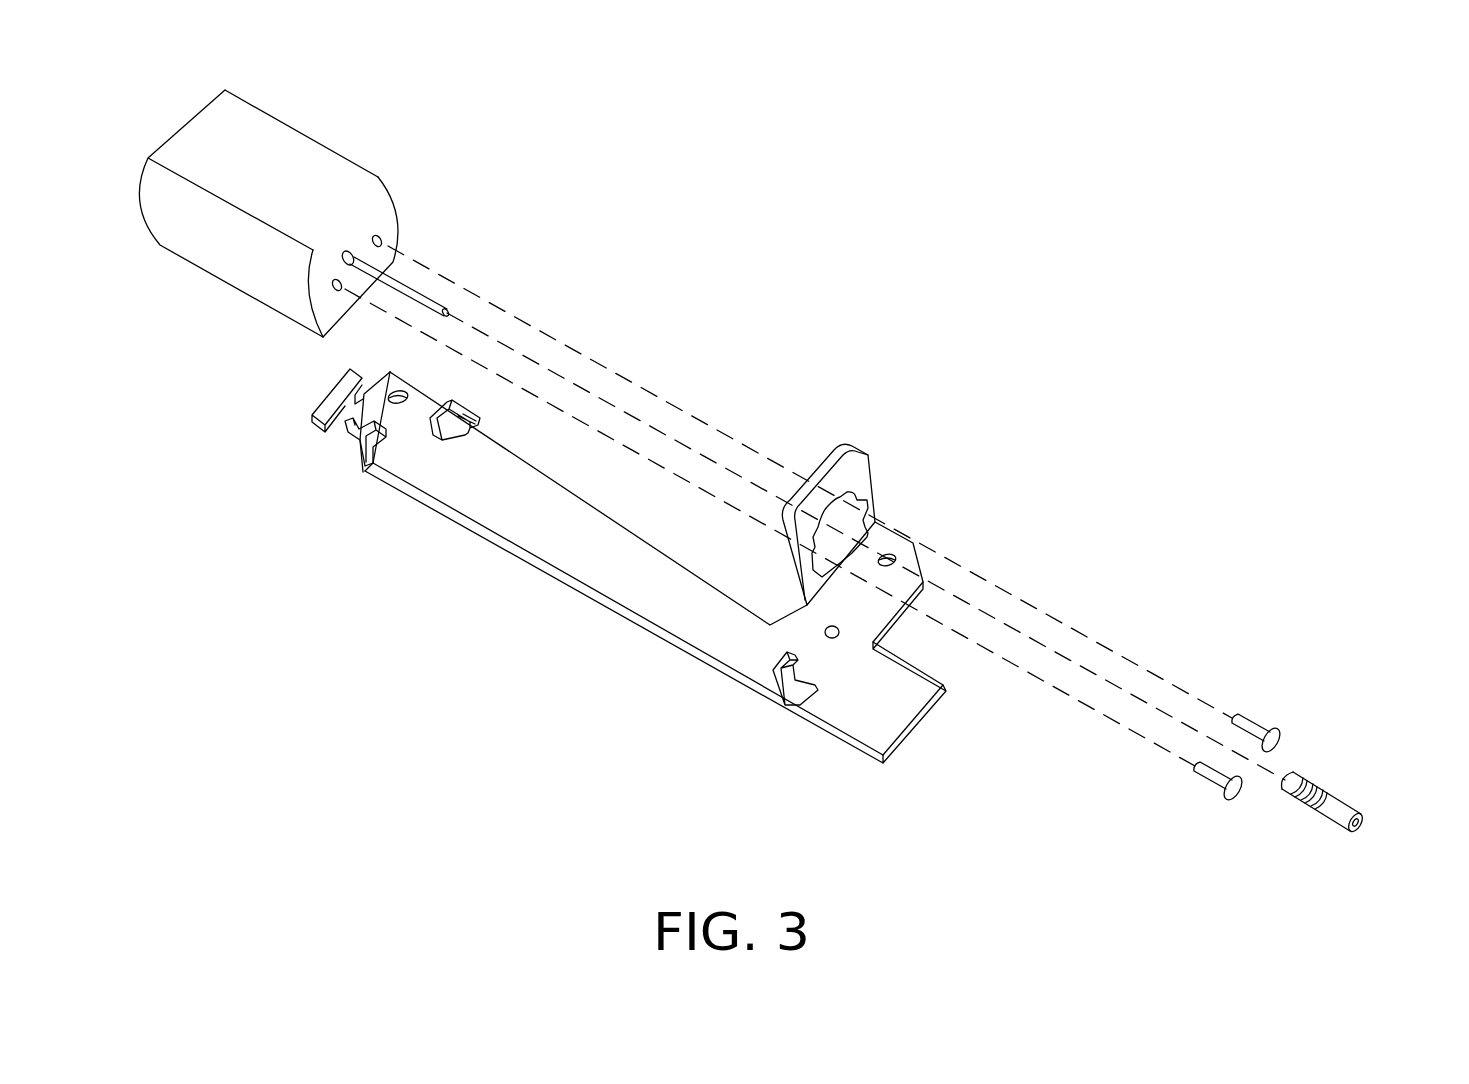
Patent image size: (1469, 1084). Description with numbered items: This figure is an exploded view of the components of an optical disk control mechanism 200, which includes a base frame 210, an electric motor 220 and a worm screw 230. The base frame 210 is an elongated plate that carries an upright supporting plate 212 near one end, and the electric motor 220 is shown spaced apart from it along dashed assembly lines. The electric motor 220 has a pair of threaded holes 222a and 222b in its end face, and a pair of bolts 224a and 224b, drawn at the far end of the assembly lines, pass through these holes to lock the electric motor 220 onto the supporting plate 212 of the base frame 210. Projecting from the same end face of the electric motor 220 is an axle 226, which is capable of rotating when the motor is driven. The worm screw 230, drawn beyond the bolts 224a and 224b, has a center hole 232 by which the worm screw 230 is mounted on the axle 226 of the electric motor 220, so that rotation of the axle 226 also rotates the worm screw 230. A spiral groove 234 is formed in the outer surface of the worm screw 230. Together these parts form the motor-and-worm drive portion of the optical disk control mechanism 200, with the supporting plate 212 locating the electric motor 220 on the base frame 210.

The optical disk control mechanism 200 is at (521, 712).
The base frame 210 is at (852, 723).
The supporting plate 212 is at (860, 472).
The electric motor 220 is at (287, 150).
The threaded hole 222a is at (333, 290).
The threaded hole 222b is at (382, 228).
The bolt 224a is at (1225, 795).
The bolt 224b is at (1273, 732).
The axle 226 is at (412, 297).
The worm screw 230 is at (1367, 814).
The center hole 232 is at (1363, 817).
The spiral groove 234 is at (1300, 780).